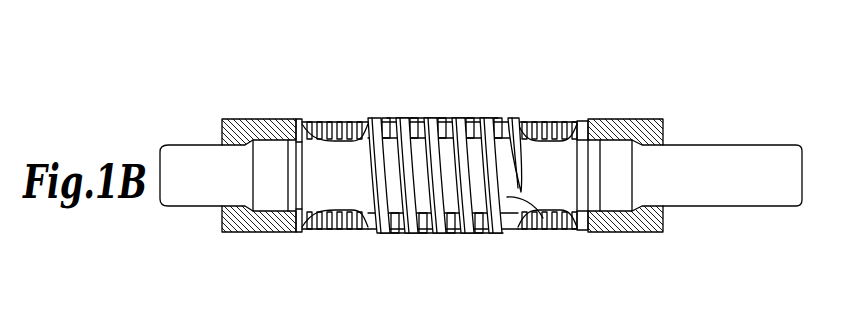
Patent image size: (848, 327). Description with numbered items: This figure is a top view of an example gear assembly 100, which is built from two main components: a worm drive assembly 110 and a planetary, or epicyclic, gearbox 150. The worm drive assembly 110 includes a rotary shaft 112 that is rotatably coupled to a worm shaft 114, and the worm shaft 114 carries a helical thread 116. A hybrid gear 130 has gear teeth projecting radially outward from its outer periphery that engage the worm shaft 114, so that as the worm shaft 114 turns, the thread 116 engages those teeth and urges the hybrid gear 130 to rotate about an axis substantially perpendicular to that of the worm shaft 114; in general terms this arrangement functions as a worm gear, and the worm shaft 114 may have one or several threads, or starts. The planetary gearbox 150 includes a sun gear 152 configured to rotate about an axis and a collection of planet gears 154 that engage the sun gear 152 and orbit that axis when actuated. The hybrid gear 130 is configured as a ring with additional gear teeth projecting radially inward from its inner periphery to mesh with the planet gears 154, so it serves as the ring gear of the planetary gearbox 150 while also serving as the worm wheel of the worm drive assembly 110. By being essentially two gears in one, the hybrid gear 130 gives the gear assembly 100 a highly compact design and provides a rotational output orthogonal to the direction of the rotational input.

The gear assembly 100 is at (287, 68).
The worm drive assembly 110 is at (163, 144).
The rotary shaft 112 is at (192, 198).
The worm shaft 114 is at (517, 105).
The helical thread 116 is at (547, 215).
The hybrid gear 130 is at (255, 234).
The planetary gearbox 150 is at (228, 110).
The sun gear 152 is at (458, 234).
The planet gears 154 is at (335, 120).